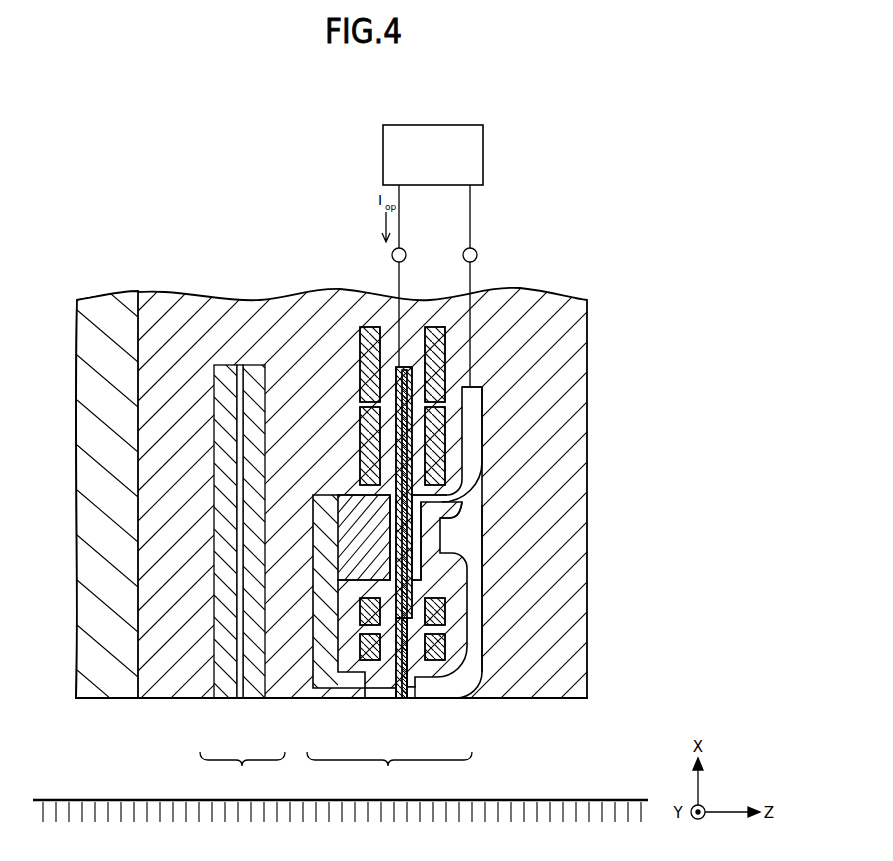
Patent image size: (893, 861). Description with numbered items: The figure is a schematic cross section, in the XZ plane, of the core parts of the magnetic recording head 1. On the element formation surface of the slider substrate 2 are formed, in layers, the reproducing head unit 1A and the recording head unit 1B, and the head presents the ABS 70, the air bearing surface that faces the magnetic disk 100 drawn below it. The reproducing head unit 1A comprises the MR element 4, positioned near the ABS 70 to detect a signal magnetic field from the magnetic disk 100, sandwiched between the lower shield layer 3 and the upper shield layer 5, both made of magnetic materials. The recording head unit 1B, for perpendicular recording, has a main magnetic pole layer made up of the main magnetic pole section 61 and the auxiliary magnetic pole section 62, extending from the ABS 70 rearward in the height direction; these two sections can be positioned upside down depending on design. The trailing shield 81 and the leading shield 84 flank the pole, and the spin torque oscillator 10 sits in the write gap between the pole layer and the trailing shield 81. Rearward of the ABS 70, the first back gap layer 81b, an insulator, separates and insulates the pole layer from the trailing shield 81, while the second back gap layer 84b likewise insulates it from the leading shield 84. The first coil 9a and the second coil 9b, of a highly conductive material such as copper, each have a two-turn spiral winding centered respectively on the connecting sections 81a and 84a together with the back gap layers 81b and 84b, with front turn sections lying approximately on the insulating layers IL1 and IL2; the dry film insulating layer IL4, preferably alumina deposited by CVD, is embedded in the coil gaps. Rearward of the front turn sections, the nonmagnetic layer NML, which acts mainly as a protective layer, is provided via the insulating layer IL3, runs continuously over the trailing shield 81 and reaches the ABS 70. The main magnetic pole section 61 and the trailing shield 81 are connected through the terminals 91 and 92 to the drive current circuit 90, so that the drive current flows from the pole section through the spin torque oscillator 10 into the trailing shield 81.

The magnetic recording head 1 is at (608, 352).
The slider substrate 2 is at (108, 700).
The lower shield layer 3 is at (217, 702).
The MR element 4 is at (240, 702).
The upper shield layer 5 is at (262, 702).
The reproducing head unit 1A is at (242, 769).
The recording head unit 1B is at (389, 769).
The auxiliary magnetic pole section 62 is at (410, 441).
The main magnetic pole section 61 is at (396, 700).
The spin torque oscillator 10 is at (402, 700).
The first coil 9a is at (435, 700).
The second coil 9b is at (353, 700).
The leading shield 84 is at (340, 700).
The connecting section 84a is at (372, 531).
The second back gap layer 84b is at (385, 514).
The trailing shield 81 is at (452, 700).
The connecting section 81a is at (445, 553).
The first back gap layer 81b is at (472, 565).
The insulating layer IL1 is at (415, 650).
The insulating layer IL2 is at (445, 610).
The insulating layer IL3 is at (452, 340).
The dry film insulating layer IL4 is at (420, 638).
The nonmagnetic layer NML is at (543, 403).
The ABS 70 is at (527, 700).
The drive current circuit 90 is at (483, 160).
The terminal 91 is at (477, 255).
The terminal 92 is at (393, 255).
The magnetic disk 100 is at (568, 800).